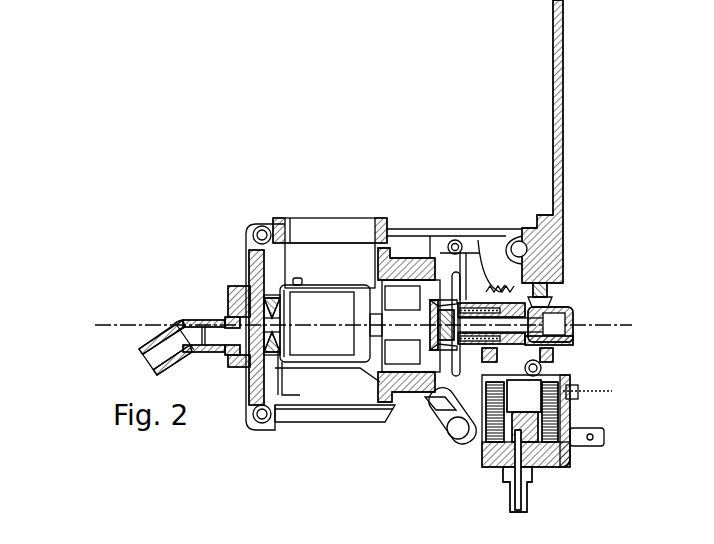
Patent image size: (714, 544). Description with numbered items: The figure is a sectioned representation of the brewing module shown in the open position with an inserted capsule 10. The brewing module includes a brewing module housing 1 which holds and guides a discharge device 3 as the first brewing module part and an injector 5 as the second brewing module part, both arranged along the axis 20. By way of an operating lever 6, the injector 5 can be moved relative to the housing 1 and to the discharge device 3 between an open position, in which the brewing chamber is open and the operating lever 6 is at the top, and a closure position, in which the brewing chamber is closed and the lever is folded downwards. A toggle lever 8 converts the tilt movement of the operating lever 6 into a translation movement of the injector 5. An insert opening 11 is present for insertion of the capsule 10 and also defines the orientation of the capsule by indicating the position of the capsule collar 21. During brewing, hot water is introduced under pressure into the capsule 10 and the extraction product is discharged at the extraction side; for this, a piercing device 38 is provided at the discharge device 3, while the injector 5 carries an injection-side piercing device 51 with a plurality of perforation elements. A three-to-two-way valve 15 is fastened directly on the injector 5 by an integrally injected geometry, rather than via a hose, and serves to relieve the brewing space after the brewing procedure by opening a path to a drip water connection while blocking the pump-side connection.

The brewing module housing 1 is at (298, 428).
The discharge device 3 is at (250, 280).
The injector 5 is at (400, 262).
The operating lever 6 is at (556, 82).
The toggle lever 8 is at (430, 397).
The capsule 10 is at (322, 317).
The insert opening 11 is at (323, 240).
The valve 15 is at (520, 368).
The axis 20 is at (112, 323).
The capsule collar 21 is at (287, 357).
The piercing device 38 is at (266, 316).
The injection-side piercing device 51 is at (442, 296).